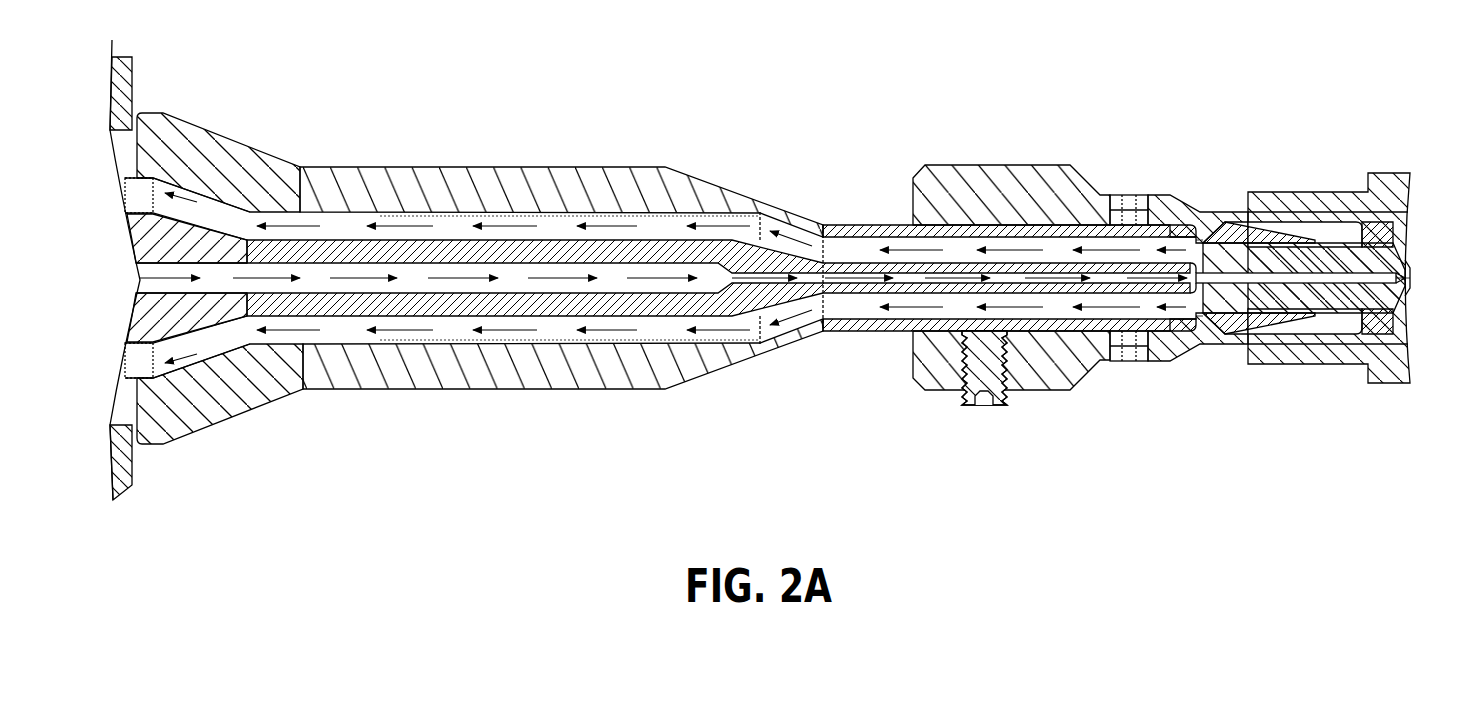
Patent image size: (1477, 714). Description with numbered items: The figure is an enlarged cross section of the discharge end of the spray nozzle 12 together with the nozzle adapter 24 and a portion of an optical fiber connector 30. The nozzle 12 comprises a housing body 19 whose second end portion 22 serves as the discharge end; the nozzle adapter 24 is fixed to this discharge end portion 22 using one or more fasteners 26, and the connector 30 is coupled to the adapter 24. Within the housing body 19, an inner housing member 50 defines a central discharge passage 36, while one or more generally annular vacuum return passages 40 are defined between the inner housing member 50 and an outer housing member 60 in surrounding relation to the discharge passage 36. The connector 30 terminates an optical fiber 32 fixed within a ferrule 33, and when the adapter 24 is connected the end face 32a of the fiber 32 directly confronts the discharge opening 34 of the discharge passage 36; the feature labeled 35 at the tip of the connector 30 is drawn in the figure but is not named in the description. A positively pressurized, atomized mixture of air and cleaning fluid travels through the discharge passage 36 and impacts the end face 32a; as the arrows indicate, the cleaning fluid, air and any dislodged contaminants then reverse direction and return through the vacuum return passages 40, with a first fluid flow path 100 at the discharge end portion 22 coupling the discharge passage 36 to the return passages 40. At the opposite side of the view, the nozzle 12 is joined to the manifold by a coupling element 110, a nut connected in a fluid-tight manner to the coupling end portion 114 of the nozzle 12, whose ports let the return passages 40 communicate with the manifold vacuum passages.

The spray nozzle 12 is at (491, 165).
The housing body 19 is at (590, 393).
The second end portion 22 is at (1195, 262).
The nozzle adapter 24 is at (990, 165).
The fastener 26 is at (966, 406).
The optical fiber connector 30 is at (1380, 171).
The optical fiber 32 is at (1327, 283).
The end face 32a is at (1204, 290).
The ferrule 33 is at (1405, 257).
The discharge opening 34 is at (1179, 230).
The nozzle bore 35 is at (1396, 274).
The discharge passage 36 is at (237, 275).
The vacuum return passage 40 is at (877, 243).
The inner housing member 50 is at (748, 250).
The outer housing member 60 is at (364, 388).
The first fluid flow path 100 is at (1190, 326).
The coupling element 110 is at (135, 80).
The coupling end portion 114 is at (140, 150).